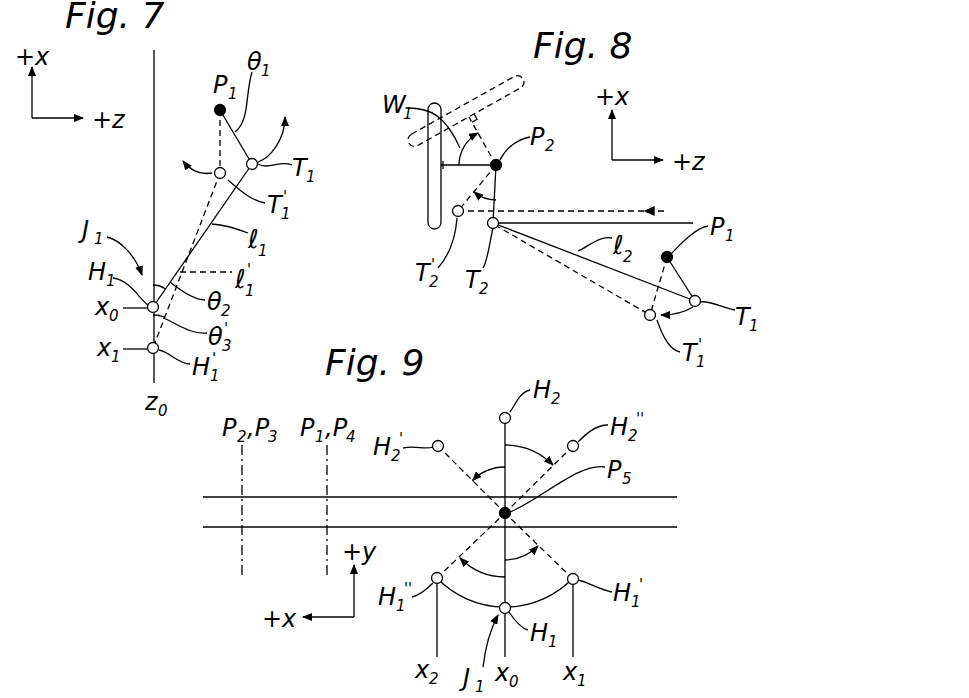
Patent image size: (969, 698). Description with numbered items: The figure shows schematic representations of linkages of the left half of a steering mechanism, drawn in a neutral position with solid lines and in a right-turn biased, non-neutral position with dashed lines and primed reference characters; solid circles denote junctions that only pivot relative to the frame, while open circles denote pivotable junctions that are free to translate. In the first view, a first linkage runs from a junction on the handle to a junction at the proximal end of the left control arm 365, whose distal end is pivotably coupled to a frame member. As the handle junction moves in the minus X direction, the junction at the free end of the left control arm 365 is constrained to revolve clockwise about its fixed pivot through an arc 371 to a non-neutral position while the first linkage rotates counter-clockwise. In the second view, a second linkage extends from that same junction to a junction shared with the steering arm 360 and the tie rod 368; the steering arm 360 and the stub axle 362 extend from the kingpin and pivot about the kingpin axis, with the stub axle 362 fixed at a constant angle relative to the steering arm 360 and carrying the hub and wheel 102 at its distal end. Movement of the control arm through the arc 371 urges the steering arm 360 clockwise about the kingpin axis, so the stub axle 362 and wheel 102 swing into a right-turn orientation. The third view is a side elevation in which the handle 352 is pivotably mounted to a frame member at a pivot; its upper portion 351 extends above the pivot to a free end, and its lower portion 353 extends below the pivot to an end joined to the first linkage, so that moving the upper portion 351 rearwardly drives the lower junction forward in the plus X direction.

In FIG. 8, the hub and wheel 102 is at (435, 103).
In FIG. 9, the upper portion of the handle 351 is at (503, 447).
In FIG. 9, the handle 352 is at (572, 416).
In FIG. 9, the lower portion of the handle 353 is at (507, 577).
In FIG. 8, the steering arm 360 is at (499, 188).
In FIG. 8, the stub axle 362 is at (480, 145).
In FIG. 7, the left control arm 365 is at (240, 135).
In FIG. 8, the left control arm 365 is at (684, 278).
In FIG. 8, the tie rod 368 is at (672, 222).
In FIG. 7, the arc 371 is at (213, 173).
In FIG. 8, the arc 371 is at (686, 313).